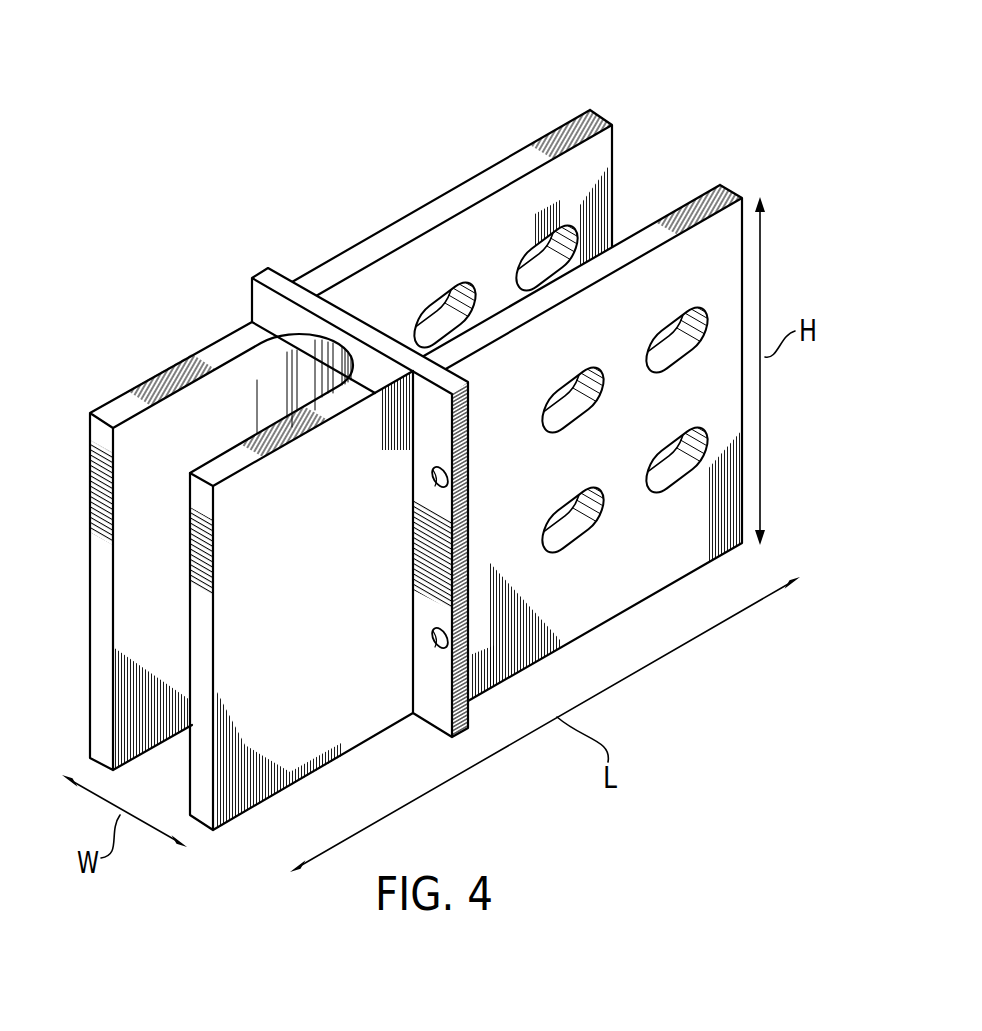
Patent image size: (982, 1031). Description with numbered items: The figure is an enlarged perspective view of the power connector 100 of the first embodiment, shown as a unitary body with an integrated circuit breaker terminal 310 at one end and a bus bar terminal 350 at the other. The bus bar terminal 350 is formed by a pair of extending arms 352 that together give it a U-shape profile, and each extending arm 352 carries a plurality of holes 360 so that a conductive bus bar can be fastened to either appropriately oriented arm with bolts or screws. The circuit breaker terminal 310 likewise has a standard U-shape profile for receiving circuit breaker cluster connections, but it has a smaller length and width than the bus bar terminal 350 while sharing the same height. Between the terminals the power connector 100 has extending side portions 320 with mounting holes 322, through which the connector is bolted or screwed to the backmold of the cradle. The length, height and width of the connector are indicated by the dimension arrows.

The power connector 100 is at (318, 104).
The circuit breaker terminal 310 is at (47, 385).
The extending side portions 320 is at (265, 266).
The mounting holes 322 is at (432, 480).
The bus bar terminal 350 is at (283, 263).
The extending arms 352 is at (603, 117).
The holes 360 is at (532, 257).